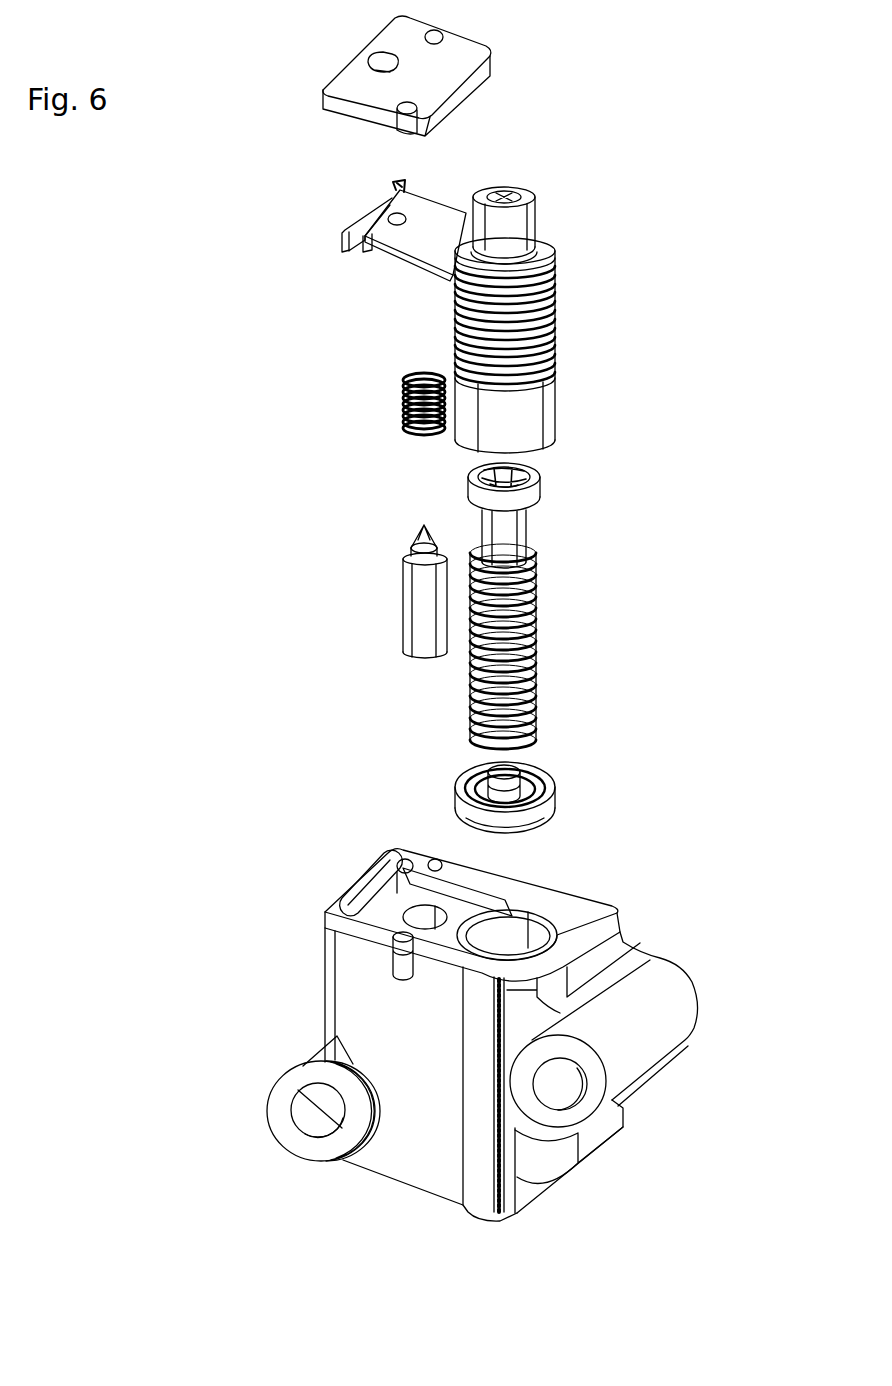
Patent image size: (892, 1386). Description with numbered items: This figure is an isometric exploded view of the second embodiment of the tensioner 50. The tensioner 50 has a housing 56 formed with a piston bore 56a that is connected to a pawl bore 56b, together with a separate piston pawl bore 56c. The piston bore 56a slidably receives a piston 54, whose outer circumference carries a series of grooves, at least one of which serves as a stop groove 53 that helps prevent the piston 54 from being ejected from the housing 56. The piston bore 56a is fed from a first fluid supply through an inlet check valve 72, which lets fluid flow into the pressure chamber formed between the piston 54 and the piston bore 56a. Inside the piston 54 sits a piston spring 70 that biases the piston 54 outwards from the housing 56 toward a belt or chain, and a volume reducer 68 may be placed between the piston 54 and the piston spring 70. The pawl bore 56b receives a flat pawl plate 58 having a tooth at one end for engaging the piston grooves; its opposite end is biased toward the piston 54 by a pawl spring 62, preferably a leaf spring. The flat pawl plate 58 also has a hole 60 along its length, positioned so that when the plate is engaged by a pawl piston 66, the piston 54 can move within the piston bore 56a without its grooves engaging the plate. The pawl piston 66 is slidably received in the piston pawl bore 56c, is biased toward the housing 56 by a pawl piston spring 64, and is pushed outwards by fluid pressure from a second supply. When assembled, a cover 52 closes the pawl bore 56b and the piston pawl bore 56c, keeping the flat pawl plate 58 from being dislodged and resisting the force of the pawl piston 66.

The tensioner 50 is at (97, 296).
The cover 52 is at (344, 82).
The stop groove 53 is at (556, 289).
The piston 54 is at (517, 237).
The housing 56 is at (469, 1020).
The piston bore 56a is at (503, 943).
The pawl bore 56b is at (393, 866).
The piston pawl bore 56c is at (424, 913).
The flat pawl plate 58 is at (379, 234).
The hole 60 is at (394, 224).
The pawl spring 62 is at (342, 240).
The pawl piston spring 64 is at (406, 384).
The pawl piston 66 is at (401, 600).
The volume reducer 68 is at (524, 527).
The piston spring 70 is at (536, 592).
The inlet check valve 72 is at (458, 790).